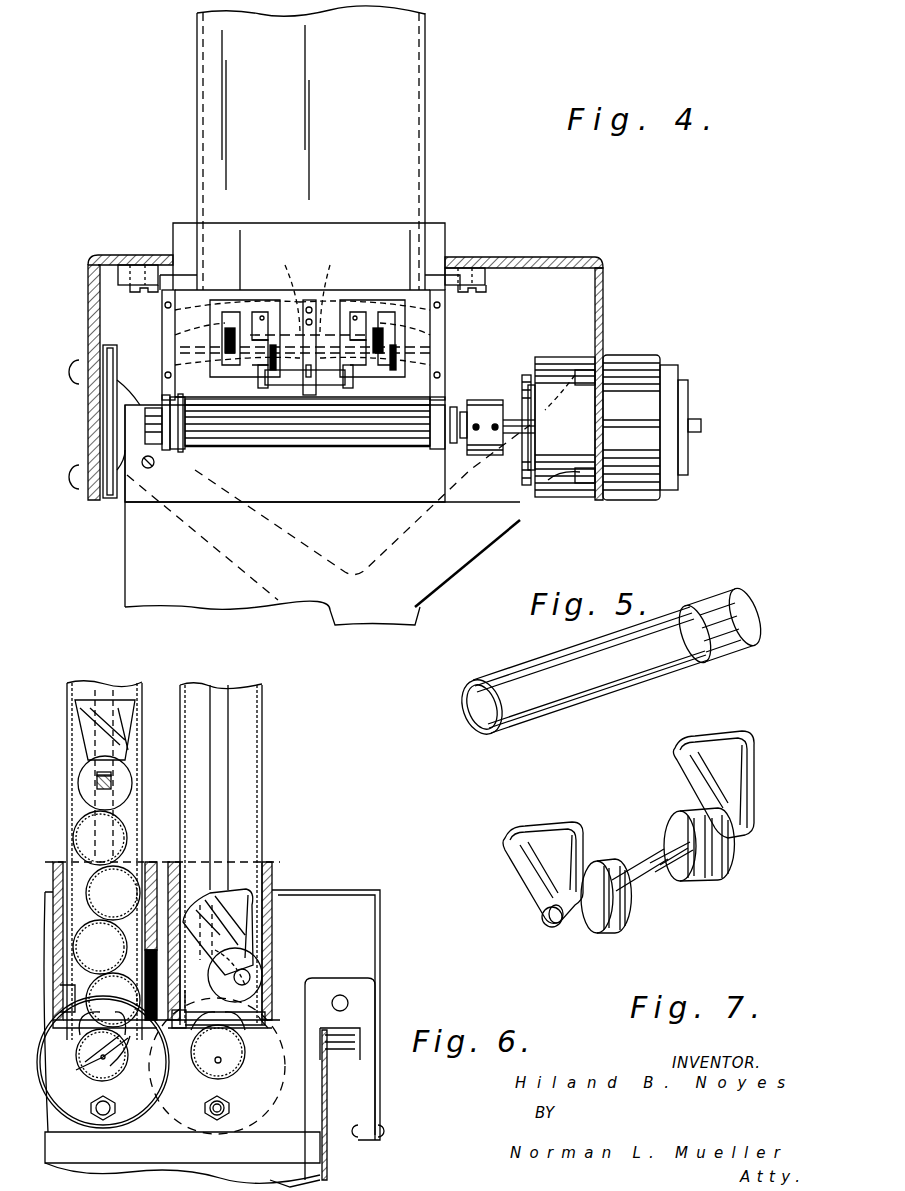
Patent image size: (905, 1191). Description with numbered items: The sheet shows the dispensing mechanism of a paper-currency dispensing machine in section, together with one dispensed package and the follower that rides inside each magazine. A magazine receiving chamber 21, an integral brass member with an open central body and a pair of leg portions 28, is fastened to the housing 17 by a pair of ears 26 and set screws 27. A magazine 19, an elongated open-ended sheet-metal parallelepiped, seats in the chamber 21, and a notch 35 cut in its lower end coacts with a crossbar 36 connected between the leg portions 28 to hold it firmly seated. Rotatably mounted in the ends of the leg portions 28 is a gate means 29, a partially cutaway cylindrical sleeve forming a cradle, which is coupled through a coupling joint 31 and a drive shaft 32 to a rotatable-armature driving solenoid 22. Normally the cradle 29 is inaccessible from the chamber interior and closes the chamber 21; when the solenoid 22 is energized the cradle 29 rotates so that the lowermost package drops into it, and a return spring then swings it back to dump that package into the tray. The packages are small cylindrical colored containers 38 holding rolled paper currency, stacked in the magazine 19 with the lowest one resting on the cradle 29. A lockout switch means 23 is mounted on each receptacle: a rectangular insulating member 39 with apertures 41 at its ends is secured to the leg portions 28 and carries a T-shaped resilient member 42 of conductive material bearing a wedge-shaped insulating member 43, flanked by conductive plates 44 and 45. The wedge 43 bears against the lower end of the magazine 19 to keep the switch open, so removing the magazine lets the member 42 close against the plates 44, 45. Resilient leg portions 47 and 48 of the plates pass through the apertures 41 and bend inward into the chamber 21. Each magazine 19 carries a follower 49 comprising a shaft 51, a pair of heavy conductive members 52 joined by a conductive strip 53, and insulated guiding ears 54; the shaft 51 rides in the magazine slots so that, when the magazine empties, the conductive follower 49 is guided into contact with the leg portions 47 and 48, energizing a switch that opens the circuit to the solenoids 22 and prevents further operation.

In FIG. 4, the housing 17 is at (97, 257).
In FIG. 6, the housing 17 is at (340, 890).
In FIG. 4, the magazine 19 is at (425, 73).
In FIG. 6, the magazine 19 is at (262, 755).
In FIG. 4, the magazine receiving chamber 21 is at (445, 225).
In FIG. 6, the magazine receiving chamber 21 is at (55, 880).
In FIG. 4, the driving solenoid 22 is at (550, 360).
In FIG. 6, the driving solenoid 22 is at (136, 1110).
In FIG. 4, the lockout switch means 23 is at (305, 305).
In FIG. 4, the ears 26 is at (125, 272).
In FIG. 4, the set screws 27 is at (140, 290).
In FIG. 4, the leg portions 28 is at (160, 422).
In FIG. 6, the leg portions 28 is at (80, 1040).
In FIG. 4, the gate means 29 is at (292, 435).
In FIG. 6, the gate means 29 is at (88, 1062).
In FIG. 4, the coupling joint 31 is at (480, 455).
In FIG. 4, the drive shaft 32 is at (524, 455).
In FIG. 6, the notch 35 is at (70, 1002).
In FIG. 4, the crossbar 36 is at (442, 365).
In FIG. 6, the crossbar 36 is at (60, 990).
In FIG. 5, the container 38 is at (548, 660).
In FIG. 6, the container 38 is at (75, 838).
In FIG. 4, the insulating member 39 is at (180, 330).
In FIG. 4, the apertures 41 is at (200, 372).
In FIG. 4, the T-shaped resilient member 42 is at (313, 300).
In FIG. 4, the wedge-shaped insulating member 43 is at (308, 388).
In FIG. 4, the conductive plate 44 is at (246, 320).
In FIG. 4, the conductive plate 45 is at (370, 305).
In FIG. 4, the resilient leg portion 47 is at (262, 378).
In FIG. 4, the resilient leg portion 48 is at (392, 372).
In FIG. 6, the resilient leg portion 48 is at (318, 953).
In FIG. 7, the follower 49 is at (636, 837).
In FIG. 6, the follower 49 is at (170, 846).
In FIG. 4, the shaft 51 is at (258, 320).
In FIG. 7, the shaft 51 is at (545, 922).
In FIG. 6, the shaft 51 is at (115, 784).
In FIG. 4, the conductive members 52 is at (232, 355).
In FIG. 7, the conductive members 52 is at (630, 920).
In FIG. 6, the conductive members 52 is at (80, 784).
In FIG. 4, the conductive strip 53 is at (332, 330).
In FIG. 7, the conductive strip 53 is at (652, 845).
In FIG. 6, the conductive strip 53 is at (112, 778).
In FIG. 7, the insulated guiding ears 54 is at (520, 835).
In FIG. 6, the insulated guiding ears 54 is at (80, 716).